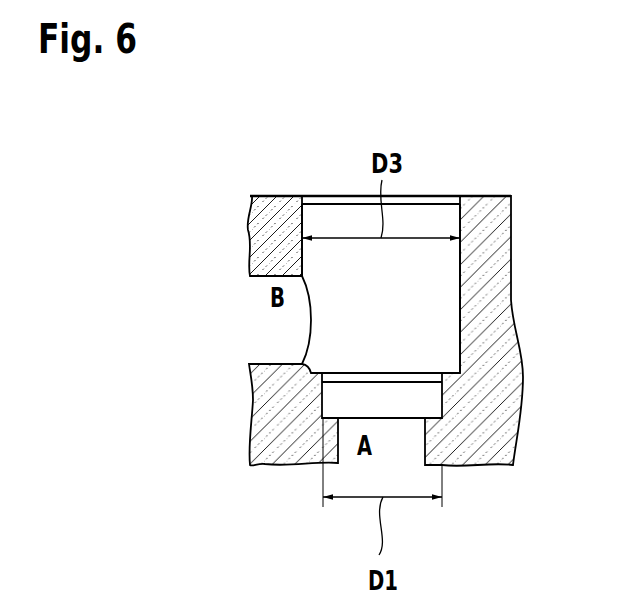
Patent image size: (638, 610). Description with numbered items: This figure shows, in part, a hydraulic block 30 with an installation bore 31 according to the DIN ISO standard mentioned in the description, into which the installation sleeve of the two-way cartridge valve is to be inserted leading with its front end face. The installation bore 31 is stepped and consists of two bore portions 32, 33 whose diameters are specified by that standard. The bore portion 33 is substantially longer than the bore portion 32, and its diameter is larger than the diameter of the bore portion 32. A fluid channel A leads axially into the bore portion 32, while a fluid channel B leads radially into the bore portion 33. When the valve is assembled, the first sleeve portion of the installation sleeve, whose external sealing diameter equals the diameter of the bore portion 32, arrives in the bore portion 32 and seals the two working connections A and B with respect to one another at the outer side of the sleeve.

The hydraulic block 30 is at (483, 239).
The installation bore 31 is at (438, 222).
The bore portion 32 is at (434, 396).
The bore portion 33 is at (462, 298).